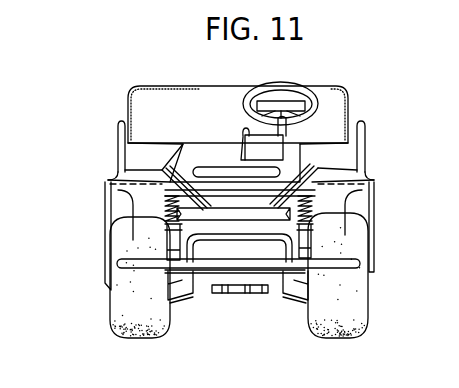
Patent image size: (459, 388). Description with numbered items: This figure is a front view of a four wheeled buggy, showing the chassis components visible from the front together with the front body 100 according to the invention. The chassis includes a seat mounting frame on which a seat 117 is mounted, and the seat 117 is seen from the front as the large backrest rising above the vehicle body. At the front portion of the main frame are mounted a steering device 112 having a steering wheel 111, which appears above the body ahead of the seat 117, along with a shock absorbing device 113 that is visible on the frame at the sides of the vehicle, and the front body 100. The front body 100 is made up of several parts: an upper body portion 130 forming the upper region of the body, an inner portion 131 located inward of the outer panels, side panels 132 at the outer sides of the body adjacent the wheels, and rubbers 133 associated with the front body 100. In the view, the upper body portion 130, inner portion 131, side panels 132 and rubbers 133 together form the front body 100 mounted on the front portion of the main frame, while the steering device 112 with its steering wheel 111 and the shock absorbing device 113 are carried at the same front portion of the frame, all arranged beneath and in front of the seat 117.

The front body 100 is at (189, 212).
The steering wheel 111 is at (297, 80).
The steering device 112 is at (290, 140).
The shock absorbing device 113 is at (306, 207).
The seat 117 is at (143, 98).
The upper body portion 130 is at (137, 155).
The inner portion 131 is at (160, 208).
The side panels 132 is at (370, 196).
The rubbers 133 is at (188, 207).